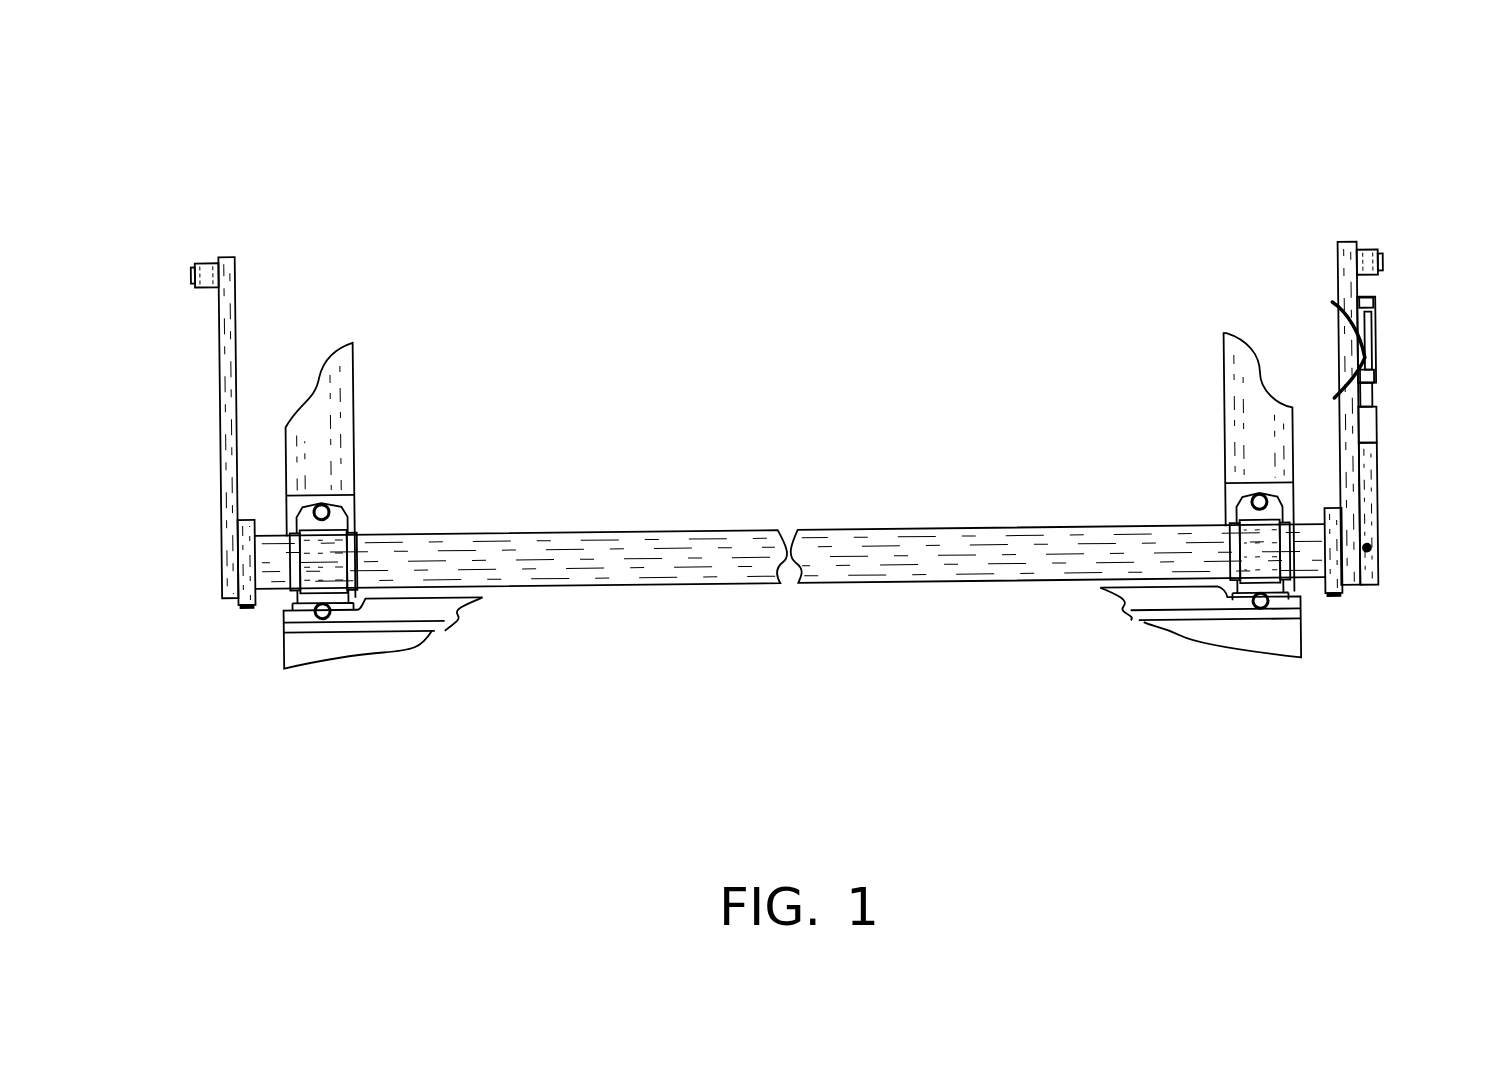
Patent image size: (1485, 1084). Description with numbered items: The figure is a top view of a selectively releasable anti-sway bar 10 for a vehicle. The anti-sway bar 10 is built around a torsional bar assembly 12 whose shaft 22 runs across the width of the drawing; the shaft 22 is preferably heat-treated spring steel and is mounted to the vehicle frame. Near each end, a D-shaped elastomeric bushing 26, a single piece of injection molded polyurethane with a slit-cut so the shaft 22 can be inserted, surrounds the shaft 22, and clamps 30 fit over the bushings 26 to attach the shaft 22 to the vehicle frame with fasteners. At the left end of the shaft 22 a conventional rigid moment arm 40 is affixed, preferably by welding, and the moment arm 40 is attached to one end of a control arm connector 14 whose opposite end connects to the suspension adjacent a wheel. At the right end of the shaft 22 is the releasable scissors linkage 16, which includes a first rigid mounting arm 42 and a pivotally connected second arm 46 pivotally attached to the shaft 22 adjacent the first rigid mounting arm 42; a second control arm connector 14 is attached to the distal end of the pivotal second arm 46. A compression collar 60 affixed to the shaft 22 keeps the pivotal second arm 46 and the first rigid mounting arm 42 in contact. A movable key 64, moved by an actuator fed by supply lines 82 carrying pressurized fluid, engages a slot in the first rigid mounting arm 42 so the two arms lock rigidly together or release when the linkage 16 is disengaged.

The releasable anti-sway bar 10 is at (597, 108).
The torsional bar assembly 12 is at (774, 676).
The control arm connector 14 is at (195, 268).
The releasable scissors linkage 16 is at (162, 370).
The shaft 22 is at (664, 535).
The D-shaped bushing 26 is at (290, 584).
The clamp 30 is at (333, 537).
The rigid moment arm 40 is at (231, 247).
The first rigid mounting arm 42 is at (1371, 582).
The pivotally connected second arm 46 is at (1352, 246).
The compression collar 60 is at (1345, 601).
The movable key 64 is at (1379, 430).
The supply lines 82 is at (1342, 371).